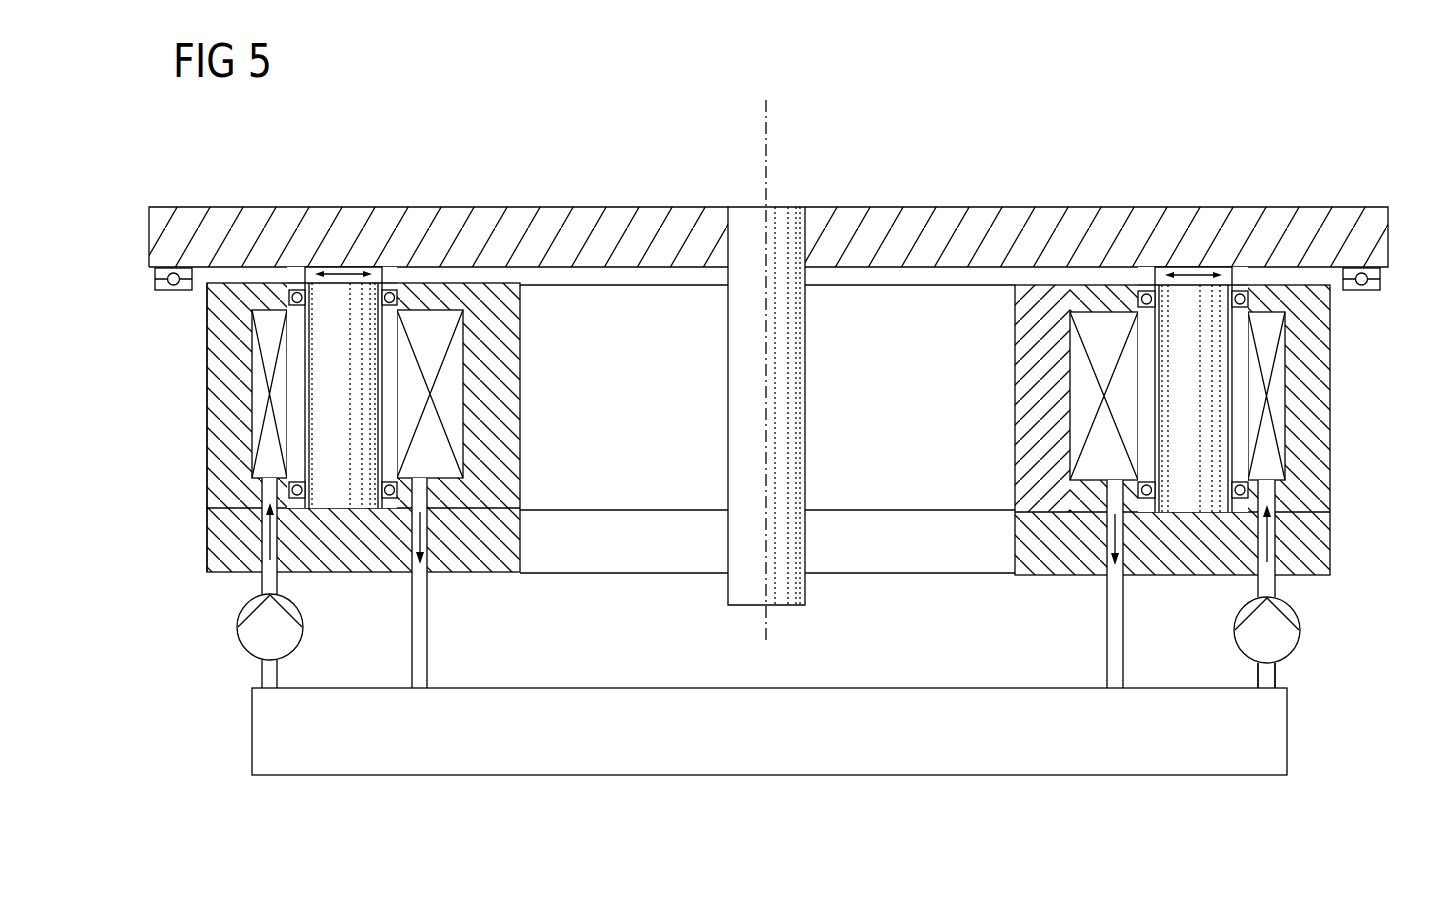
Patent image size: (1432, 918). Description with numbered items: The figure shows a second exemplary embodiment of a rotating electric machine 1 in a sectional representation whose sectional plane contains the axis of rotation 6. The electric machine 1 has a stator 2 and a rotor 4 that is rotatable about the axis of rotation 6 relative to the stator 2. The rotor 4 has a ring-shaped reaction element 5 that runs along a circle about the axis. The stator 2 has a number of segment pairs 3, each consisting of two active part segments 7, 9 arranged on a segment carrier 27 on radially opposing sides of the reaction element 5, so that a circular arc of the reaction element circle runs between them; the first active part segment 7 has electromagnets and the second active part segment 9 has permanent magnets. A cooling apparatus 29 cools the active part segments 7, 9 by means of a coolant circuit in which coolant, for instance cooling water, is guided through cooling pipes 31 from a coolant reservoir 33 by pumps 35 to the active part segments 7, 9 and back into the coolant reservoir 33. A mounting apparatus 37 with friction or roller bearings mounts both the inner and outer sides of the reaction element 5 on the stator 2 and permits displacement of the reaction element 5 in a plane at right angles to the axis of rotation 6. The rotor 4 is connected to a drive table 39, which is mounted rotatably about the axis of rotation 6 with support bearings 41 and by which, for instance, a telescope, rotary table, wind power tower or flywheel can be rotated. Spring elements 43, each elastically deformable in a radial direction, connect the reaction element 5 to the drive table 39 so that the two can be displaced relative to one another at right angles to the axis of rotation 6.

The rotating electric machine 1 is at (186, 386).
The stator 2 is at (527, 543).
The segment pair 3 is at (570, 345).
The rotor 4 is at (1225, 372).
The reaction element 5 is at (1217, 424).
The axis of rotation 6 is at (768, 112).
The first active part segment 7 is at (445, 372).
The second active part segment 9 is at (262, 460).
The segment carrier 27 is at (1308, 476).
The cooling apparatus 29 is at (1294, 674).
The cooling pipes 31 is at (420, 631).
The coolant reservoir 33 is at (1288, 736).
The pump 35 is at (1302, 637).
The mounting apparatus 37 is at (388, 283).
The drive table 39 is at (955, 240).
The support bearing 41 is at (1370, 291).
The spring element 43 is at (1228, 276).